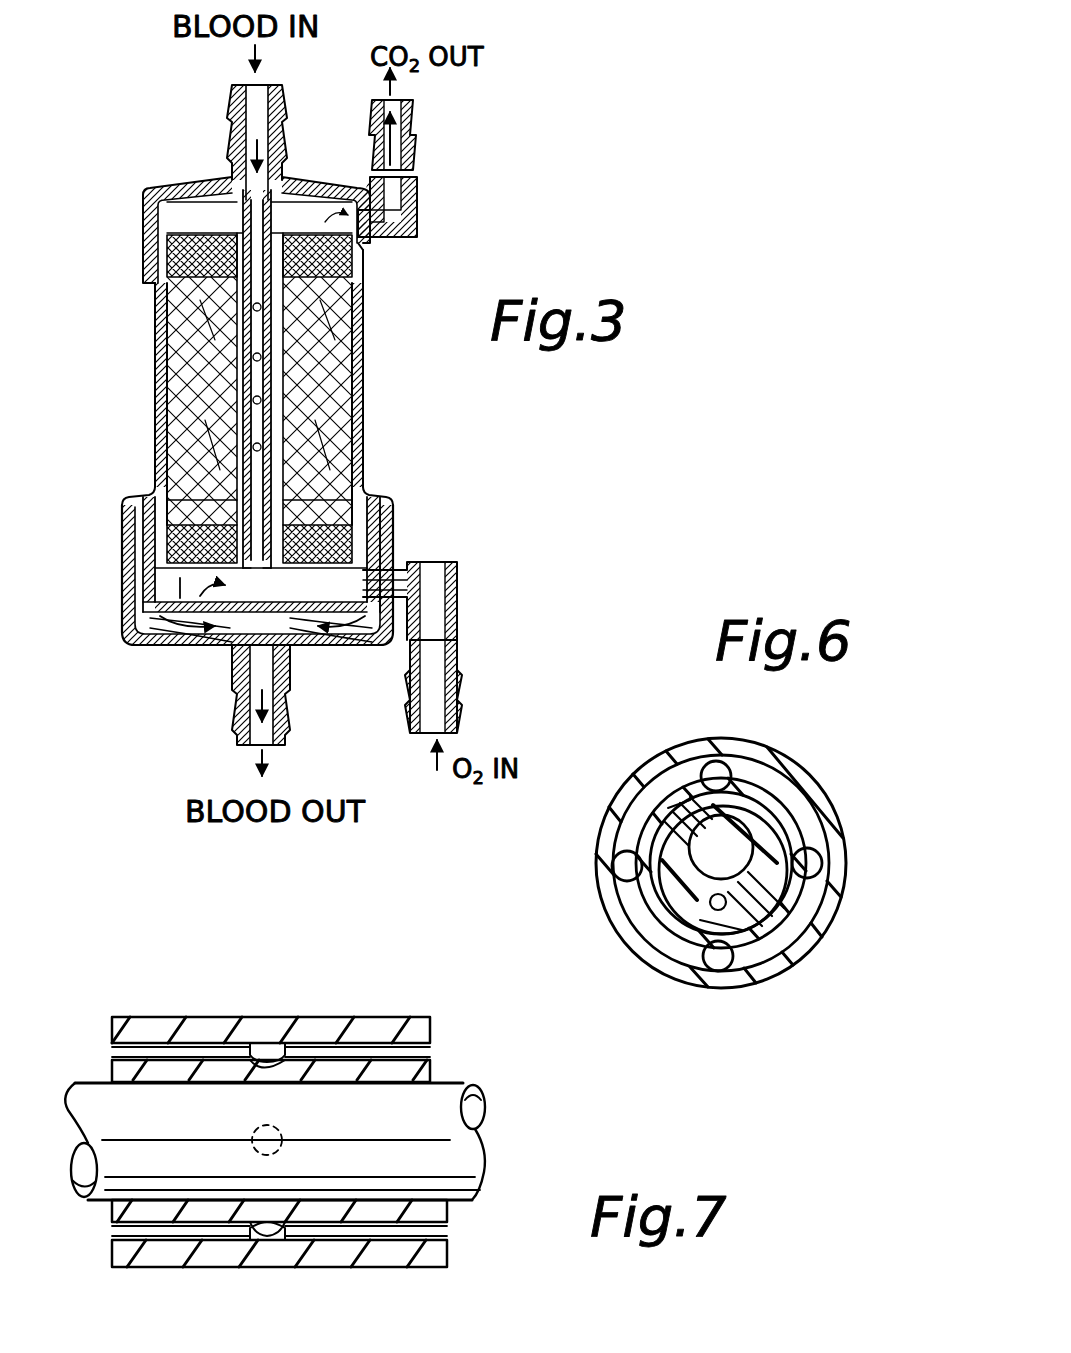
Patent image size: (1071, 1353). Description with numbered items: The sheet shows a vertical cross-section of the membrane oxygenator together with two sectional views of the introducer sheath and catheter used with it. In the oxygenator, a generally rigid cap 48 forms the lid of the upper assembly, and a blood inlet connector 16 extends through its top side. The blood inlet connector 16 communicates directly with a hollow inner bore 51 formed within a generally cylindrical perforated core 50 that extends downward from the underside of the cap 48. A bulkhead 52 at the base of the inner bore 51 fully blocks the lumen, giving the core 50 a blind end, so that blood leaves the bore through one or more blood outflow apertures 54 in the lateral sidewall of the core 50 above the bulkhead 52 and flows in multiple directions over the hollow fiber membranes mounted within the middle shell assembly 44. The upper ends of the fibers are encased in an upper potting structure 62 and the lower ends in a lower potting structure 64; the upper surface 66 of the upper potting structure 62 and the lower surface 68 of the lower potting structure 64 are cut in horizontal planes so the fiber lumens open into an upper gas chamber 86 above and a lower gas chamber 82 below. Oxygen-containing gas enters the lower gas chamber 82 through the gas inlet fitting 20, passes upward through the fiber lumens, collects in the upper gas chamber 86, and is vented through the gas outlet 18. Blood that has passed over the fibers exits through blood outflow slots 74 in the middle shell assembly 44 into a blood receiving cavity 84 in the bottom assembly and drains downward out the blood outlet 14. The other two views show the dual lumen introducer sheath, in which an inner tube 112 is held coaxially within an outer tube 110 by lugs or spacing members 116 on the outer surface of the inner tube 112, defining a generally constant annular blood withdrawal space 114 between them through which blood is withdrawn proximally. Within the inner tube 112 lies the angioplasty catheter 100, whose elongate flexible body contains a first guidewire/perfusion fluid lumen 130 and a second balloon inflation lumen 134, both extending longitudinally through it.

In FIG. 3, the blood outlet 14 is at (287, 690).
In FIG. 3, the blood inlet connector 16 is at (232, 116).
In FIG. 3, the gas outlet 18 is at (405, 195).
In FIG. 3, the gas inlet fitting 20 is at (445, 606).
In FIG. 3, the middle shell assembly 44 is at (370, 385).
In FIG. 3, the cap 48 is at (143, 225).
In FIG. 3, the perforated core 50 is at (176, 405).
In FIG. 3, the hollow inner bore 51 is at (272, 322).
In FIG. 3, the bulkhead 52 is at (155, 595).
In FIG. 3, the blood outflow apertures 54 is at (246, 357).
In FIG. 3, the upper potting structure 62 is at (345, 255).
In FIG. 3, the lower potting structure 64 is at (350, 562).
In FIG. 3, the upper surface of the upper potting structure 66 is at (212, 225).
In FIG. 3, the lower surface of the lower potting structure 68 is at (192, 614).
In FIG. 3, the blood outflow slots 74 is at (340, 500).
In FIG. 3, the lower gas chamber 82 is at (222, 614).
In FIG. 3, the blood receiving cavity 84 is at (305, 626).
In FIG. 3, the upper gas chamber 86 is at (305, 215).
In FIG. 6, the angioplasty catheter 100 is at (760, 865).
In FIG. 7, the angioplasty catheter 100 is at (425, 1120).
In FIG. 6, the outer tube 110 is at (650, 758).
In FIG. 7, the outer tube 110 is at (225, 1032).
In FIG. 6, the inner tube 112 is at (663, 907).
In FIG. 7, the inner tube 112 is at (340, 1070).
In FIG. 6, the annular blood withdrawal space 114 is at (775, 800).
In FIG. 7, the annular blood withdrawal space 114 is at (432, 1052).
In FIG. 6, the lugs or spacing members 116 is at (720, 772).
In FIG. 7, the lugs or spacing members 116 is at (266, 1050).
In FIG. 6, the guidewire/perfusion fluid lumen 130 is at (724, 843).
In FIG. 6, the balloon inflation lumen 134 is at (726, 905).